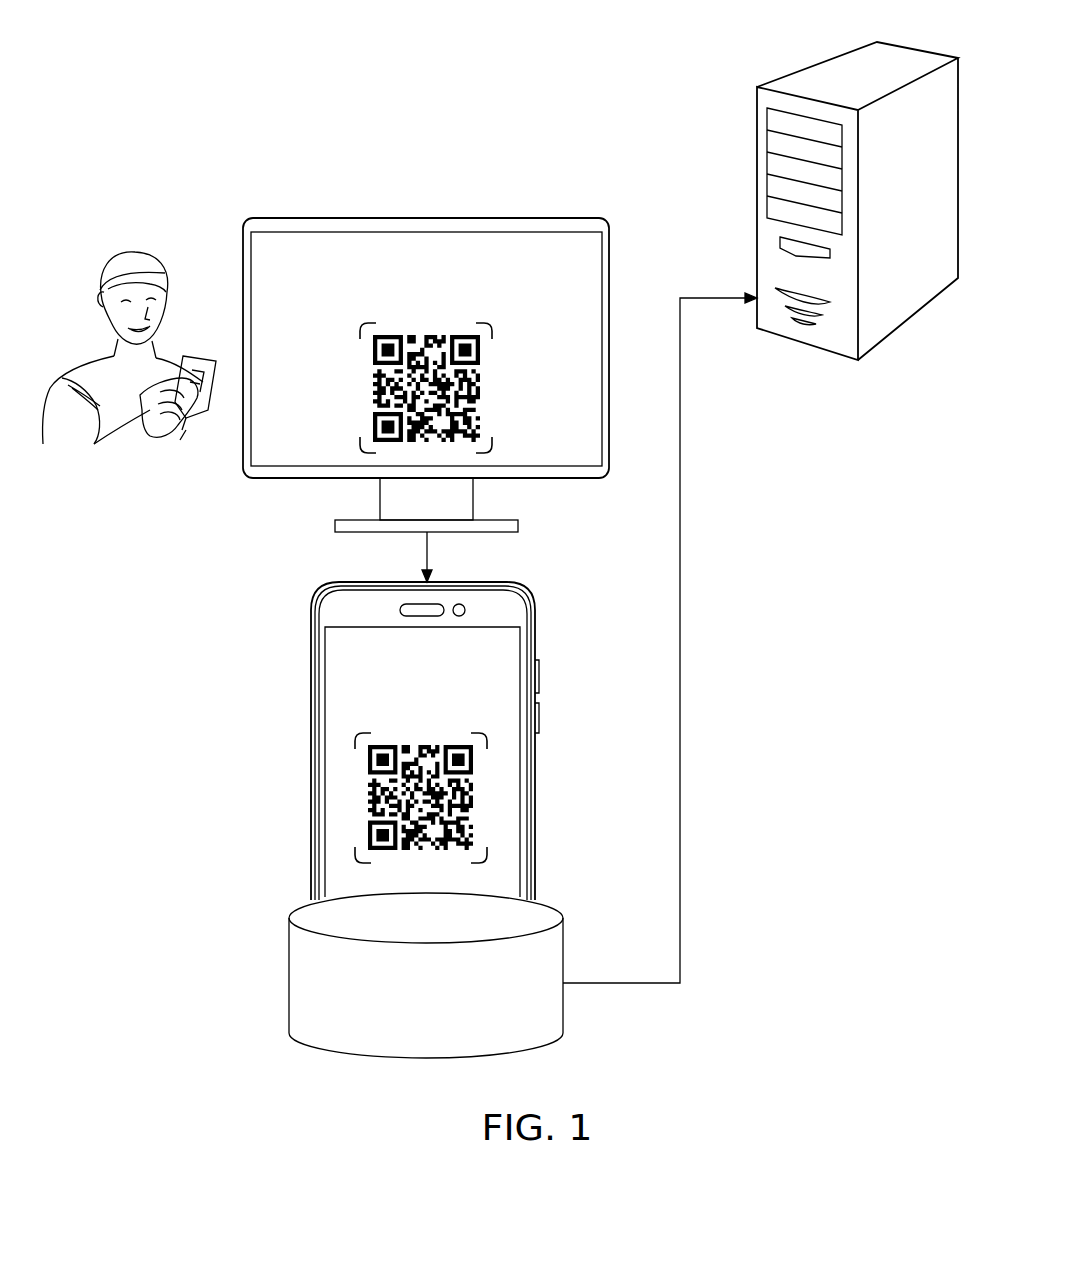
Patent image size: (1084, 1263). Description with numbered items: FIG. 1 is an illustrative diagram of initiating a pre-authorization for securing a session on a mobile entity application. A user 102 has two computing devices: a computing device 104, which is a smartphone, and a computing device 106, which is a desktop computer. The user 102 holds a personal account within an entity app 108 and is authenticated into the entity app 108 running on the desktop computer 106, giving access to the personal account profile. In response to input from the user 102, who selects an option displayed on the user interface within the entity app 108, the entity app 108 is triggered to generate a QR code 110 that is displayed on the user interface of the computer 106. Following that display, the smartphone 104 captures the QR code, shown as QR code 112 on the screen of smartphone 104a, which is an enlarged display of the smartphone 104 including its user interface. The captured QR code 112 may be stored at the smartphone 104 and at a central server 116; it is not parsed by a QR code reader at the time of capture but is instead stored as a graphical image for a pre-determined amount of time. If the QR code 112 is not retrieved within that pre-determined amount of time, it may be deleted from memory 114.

The user 102 is at (132, 251).
The computing device 104 is at (195, 355).
The smartphone 104a is at (455, 583).
The computing device 106 is at (428, 217).
The entity app 108 is at (598, 253).
The QR code 110 is at (494, 392).
The QR code 112 is at (358, 797).
The memory 114 is at (288, 1026).
The central server 116 is at (875, 42).